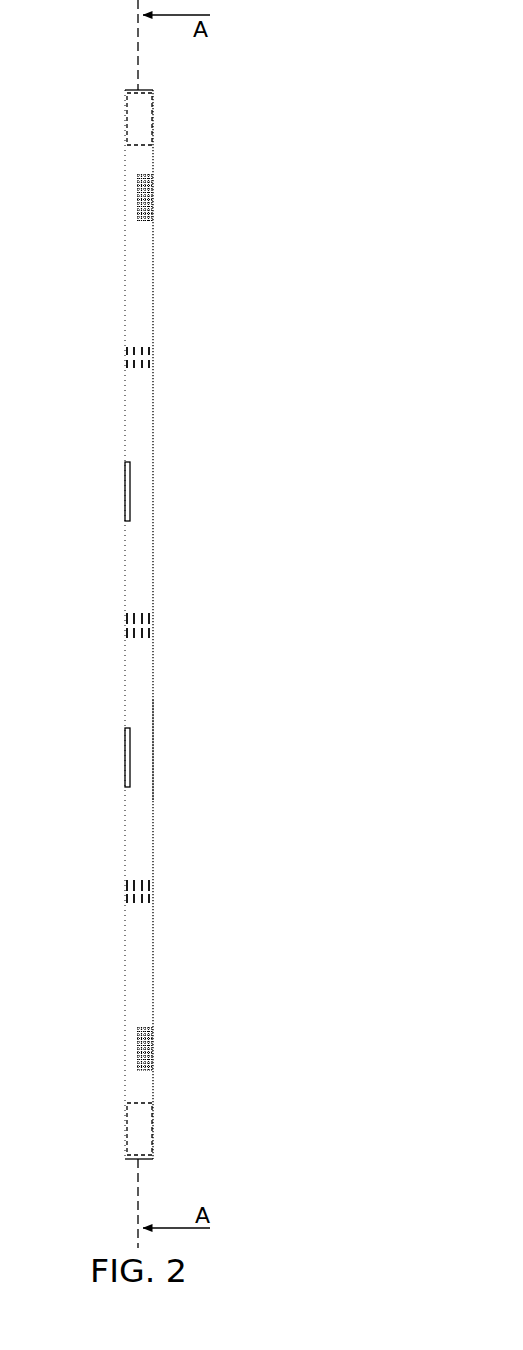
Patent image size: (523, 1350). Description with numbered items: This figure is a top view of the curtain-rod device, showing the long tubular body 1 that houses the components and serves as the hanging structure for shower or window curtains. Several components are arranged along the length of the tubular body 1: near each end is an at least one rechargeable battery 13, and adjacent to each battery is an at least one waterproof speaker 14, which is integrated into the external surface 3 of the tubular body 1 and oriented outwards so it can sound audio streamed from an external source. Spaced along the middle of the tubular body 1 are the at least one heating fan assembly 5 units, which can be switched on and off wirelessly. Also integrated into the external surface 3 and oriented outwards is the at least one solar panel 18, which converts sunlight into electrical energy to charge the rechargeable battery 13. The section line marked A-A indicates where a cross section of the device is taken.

The tubular body 1 is at (130, 674).
The external surface 3 is at (154, 743).
The heating fan assembly 5 is at (168, 353).
The rechargeable battery 13 is at (131, 117).
The waterproof speaker 14 is at (174, 198).
The solar panel 18 is at (128, 482).